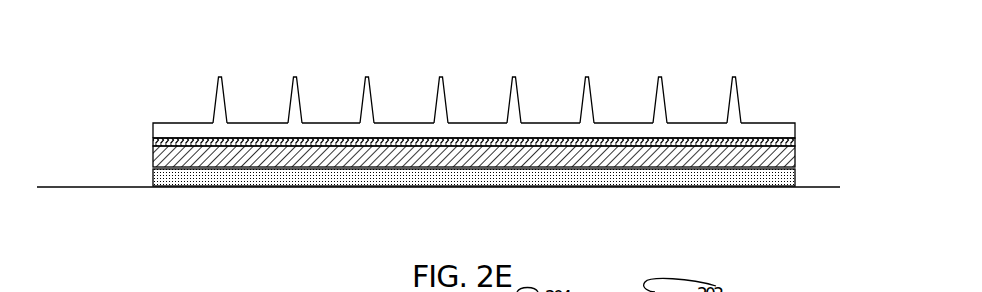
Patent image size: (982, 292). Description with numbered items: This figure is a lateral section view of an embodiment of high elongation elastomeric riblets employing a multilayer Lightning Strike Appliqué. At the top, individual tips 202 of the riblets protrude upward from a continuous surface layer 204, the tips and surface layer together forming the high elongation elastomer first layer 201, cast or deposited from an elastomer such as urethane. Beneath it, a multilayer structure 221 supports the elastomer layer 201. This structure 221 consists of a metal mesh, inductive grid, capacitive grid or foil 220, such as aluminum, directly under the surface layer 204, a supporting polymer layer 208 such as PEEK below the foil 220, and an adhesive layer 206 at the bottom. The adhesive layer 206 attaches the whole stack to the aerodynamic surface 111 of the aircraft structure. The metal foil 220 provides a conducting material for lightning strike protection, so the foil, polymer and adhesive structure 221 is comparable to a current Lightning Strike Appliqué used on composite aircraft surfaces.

The surface 111 is at (80, 187).
The first layer 201 is at (504, 80).
The tips 202 is at (662, 121).
The surface layer 204 is at (472, 130).
The adhesive layer 206 is at (153, 184).
The supporting polymer layer 208 is at (153, 160).
The metal foil 220 is at (153, 142).
The multilayer structure 221 is at (463, 158).